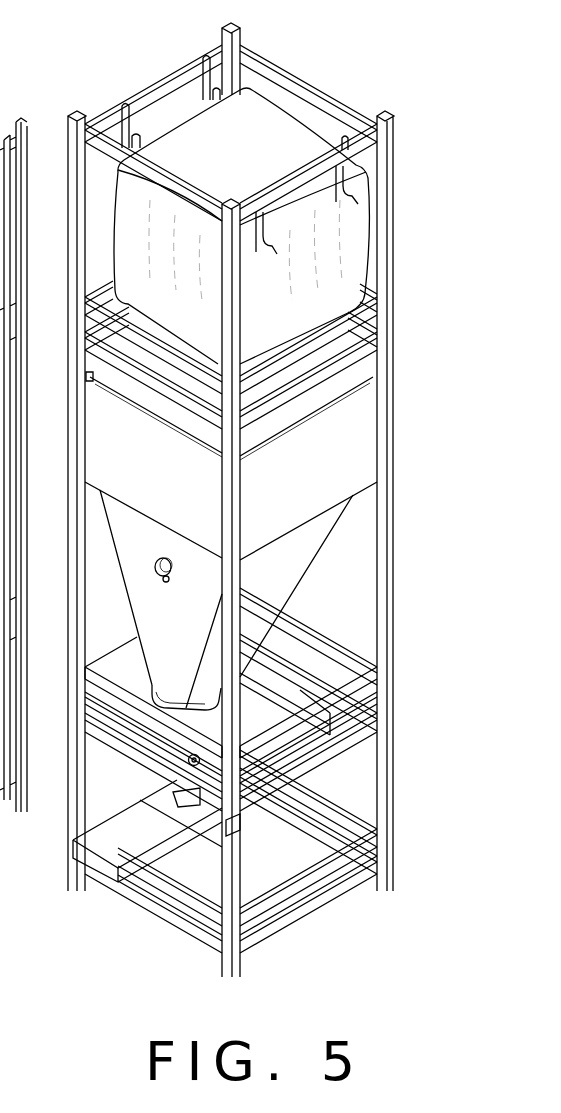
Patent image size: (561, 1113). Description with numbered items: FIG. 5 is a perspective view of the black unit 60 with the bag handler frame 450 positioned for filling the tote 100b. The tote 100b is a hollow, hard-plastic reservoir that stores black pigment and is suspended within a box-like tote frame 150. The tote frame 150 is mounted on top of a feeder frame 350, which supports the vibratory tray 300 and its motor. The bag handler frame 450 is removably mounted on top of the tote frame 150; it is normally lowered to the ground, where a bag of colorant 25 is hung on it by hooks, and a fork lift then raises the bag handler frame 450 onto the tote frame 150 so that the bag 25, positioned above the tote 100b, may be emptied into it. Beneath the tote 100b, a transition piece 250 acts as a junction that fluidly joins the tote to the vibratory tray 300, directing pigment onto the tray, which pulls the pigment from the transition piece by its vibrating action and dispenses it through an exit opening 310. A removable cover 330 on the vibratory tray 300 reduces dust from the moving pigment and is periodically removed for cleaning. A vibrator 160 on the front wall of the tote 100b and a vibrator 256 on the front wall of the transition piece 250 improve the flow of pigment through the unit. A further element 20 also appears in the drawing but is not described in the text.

The black unit 60 is at (318, 59).
The bag handler frame 450 is at (387, 190).
The bag of pigment 25 is at (340, 267).
The tote 100b is at (353, 442).
The tote frame 150 is at (254, 500).
The vibrator 160 is at (172, 576).
The hopper discharge cone 20 is at (163, 643).
The exit opening 310 is at (98, 866).
The removable cover 330 is at (120, 846).
The vibratory tray 300 is at (207, 802).
The transition piece 250 is at (198, 768).
The vibrator 256 is at (234, 832).
The feeder frame 350 is at (393, 845).